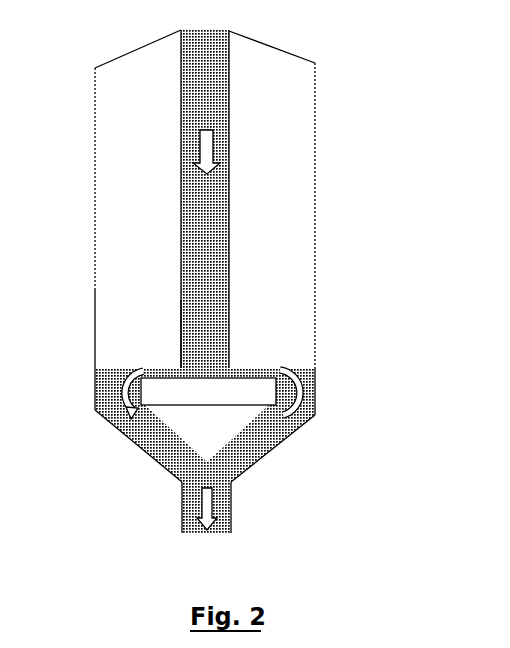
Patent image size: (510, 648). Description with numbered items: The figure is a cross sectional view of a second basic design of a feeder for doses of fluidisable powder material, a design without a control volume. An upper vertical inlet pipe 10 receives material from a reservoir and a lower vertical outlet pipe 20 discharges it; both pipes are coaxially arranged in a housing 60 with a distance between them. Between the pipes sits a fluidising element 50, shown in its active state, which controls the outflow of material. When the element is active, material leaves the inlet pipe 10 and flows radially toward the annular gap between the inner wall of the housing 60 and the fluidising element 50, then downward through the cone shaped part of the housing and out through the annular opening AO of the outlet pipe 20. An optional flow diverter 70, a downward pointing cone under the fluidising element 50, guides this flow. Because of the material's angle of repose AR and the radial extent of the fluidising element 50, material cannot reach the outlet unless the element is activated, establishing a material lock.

The inlet pipe 10 is at (240, 166).
The outlet pipe 20 is at (241, 512).
The fluidising element 50 is at (288, 392).
The housing 60 is at (321, 96).
The flow diverter 70 is at (238, 423).
The angle of repose AR is at (180, 360).
The annular opening AO is at (267, 438).